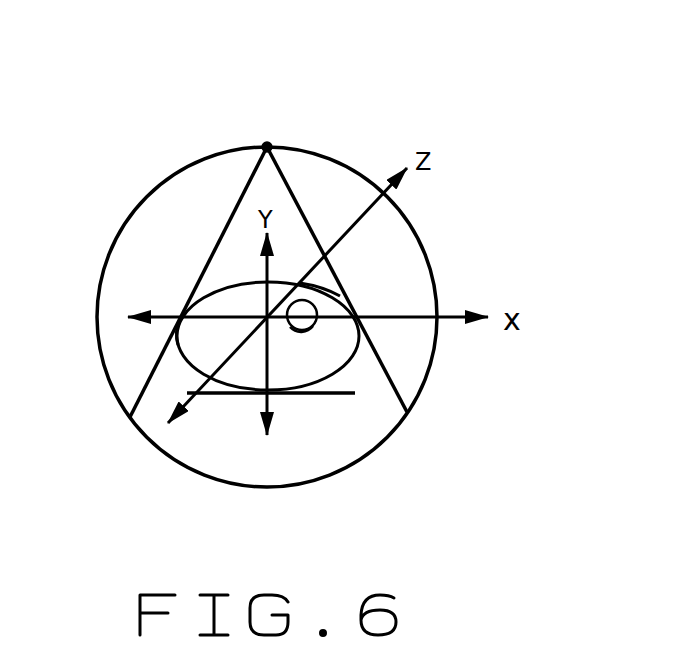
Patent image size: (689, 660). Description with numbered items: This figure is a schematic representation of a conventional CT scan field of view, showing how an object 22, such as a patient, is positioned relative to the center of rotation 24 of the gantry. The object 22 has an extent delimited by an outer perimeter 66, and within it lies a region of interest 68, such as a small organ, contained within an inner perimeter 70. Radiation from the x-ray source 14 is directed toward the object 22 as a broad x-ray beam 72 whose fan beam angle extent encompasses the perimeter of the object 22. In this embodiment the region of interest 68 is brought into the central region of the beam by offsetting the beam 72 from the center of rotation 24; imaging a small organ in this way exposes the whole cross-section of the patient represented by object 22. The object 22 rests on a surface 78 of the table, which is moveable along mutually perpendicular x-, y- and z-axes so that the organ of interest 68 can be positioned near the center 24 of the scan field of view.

The x-ray source 14 is at (267, 147).
The object 22 is at (235, 296).
The center of rotation 24 is at (200, 352).
The outer perimeter 66 is at (323, 287).
The region of interest 68 is at (304, 330).
The inner perimeter 70 is at (316, 312).
The broad x-ray beam 72 is at (408, 382).
The surface 78 is at (298, 393).